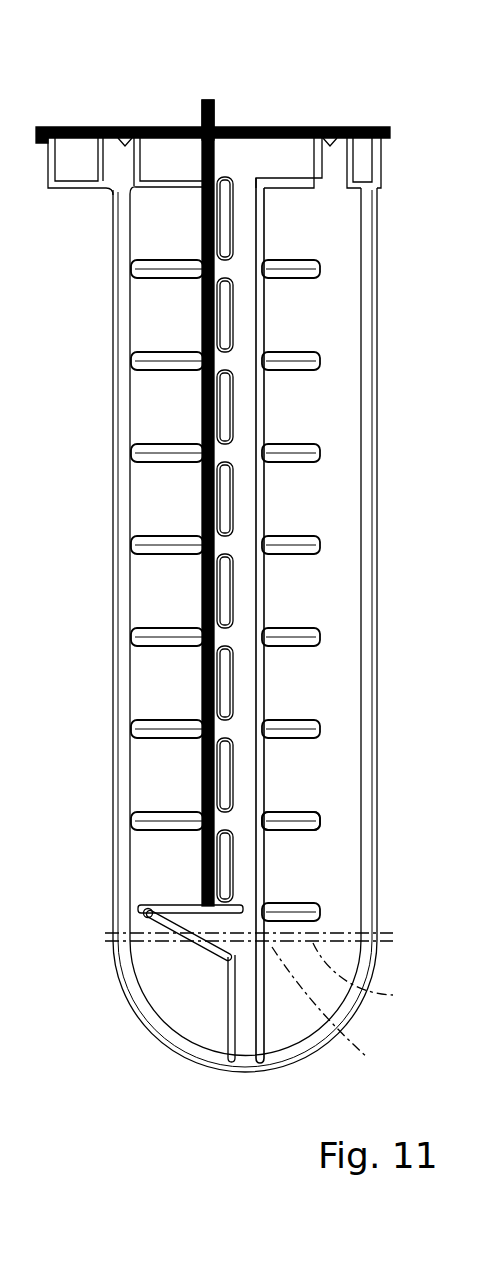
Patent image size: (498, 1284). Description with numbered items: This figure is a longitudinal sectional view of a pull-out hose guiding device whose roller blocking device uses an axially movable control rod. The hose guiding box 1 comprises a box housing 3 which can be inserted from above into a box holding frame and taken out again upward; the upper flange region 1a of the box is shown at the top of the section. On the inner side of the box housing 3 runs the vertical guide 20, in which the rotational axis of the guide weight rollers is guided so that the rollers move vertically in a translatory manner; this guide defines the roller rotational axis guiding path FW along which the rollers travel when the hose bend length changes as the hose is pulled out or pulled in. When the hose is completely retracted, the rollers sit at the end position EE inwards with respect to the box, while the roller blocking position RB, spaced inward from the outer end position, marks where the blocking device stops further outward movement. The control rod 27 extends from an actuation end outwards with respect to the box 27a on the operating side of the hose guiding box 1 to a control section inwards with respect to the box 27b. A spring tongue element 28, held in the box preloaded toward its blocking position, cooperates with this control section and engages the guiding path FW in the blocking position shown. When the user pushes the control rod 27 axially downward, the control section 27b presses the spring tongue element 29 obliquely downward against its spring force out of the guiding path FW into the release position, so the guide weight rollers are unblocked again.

The hose guiding box 1 is at (243, 559).
The flange 1a is at (98, 128).
The box housing 3 is at (378, 278).
The vertical guide 20 is at (243, 682).
The control rod 27 is at (207, 682).
The actuation end outwards with respect to the box 27a is at (213, 123).
The control section inwards with respect to the box 27b is at (203, 896).
The spring tongue element 28 is at (190, 912).
The spring tongue element 29 is at (228, 908).
The roller rotational axis guiding path FW is at (247, 858).
The end position inwards with respect to the box EE is at (269, 973).
The roller blocking position RB is at (326, 1021).